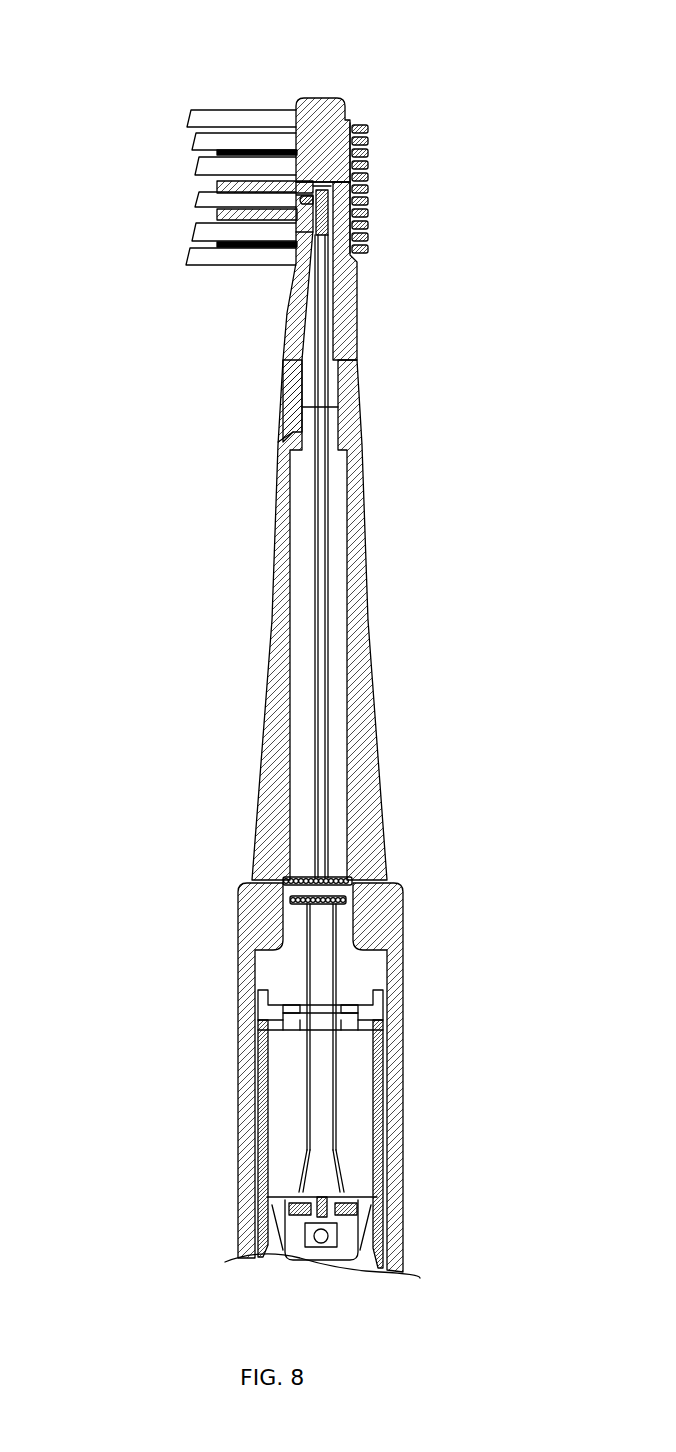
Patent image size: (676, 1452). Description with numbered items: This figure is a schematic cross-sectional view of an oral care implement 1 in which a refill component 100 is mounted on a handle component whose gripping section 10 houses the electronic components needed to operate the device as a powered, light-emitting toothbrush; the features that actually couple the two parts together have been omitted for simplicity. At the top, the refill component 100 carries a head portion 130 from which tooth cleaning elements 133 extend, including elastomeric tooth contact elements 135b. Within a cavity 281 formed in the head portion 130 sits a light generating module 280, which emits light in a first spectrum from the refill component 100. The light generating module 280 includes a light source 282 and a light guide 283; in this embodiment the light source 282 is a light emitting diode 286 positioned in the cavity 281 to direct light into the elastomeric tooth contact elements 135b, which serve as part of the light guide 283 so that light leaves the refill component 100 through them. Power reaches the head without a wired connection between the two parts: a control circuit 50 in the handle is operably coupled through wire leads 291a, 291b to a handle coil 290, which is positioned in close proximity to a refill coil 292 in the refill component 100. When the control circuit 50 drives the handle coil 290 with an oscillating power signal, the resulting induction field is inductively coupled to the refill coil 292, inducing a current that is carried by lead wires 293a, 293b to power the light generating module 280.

The oral care implement 1 is at (527, 236).
The gripping section 10 is at (404, 1086).
The control circuit 50 is at (345, 1242).
The refill component 100 is at (372, 677).
The head portion 130 is at (318, 100).
The tooth cleaning elements 133 is at (184, 100).
The elastomeric tooth contact elements 135b is at (218, 187).
The light generating module 280 is at (352, 125).
The cavity 281 is at (328, 208).
The light source 282 is at (321, 182).
The light guide 283 is at (304, 262).
The light emitting diode 286 is at (320, 228).
The handle coil 290 is at (346, 900).
The wire lead 291a is at (307, 960).
The wire lead 291b is at (335, 976).
The refill coil 292 is at (332, 876).
The lead wire 293a is at (316, 555).
The lead wire 293b is at (327, 560).